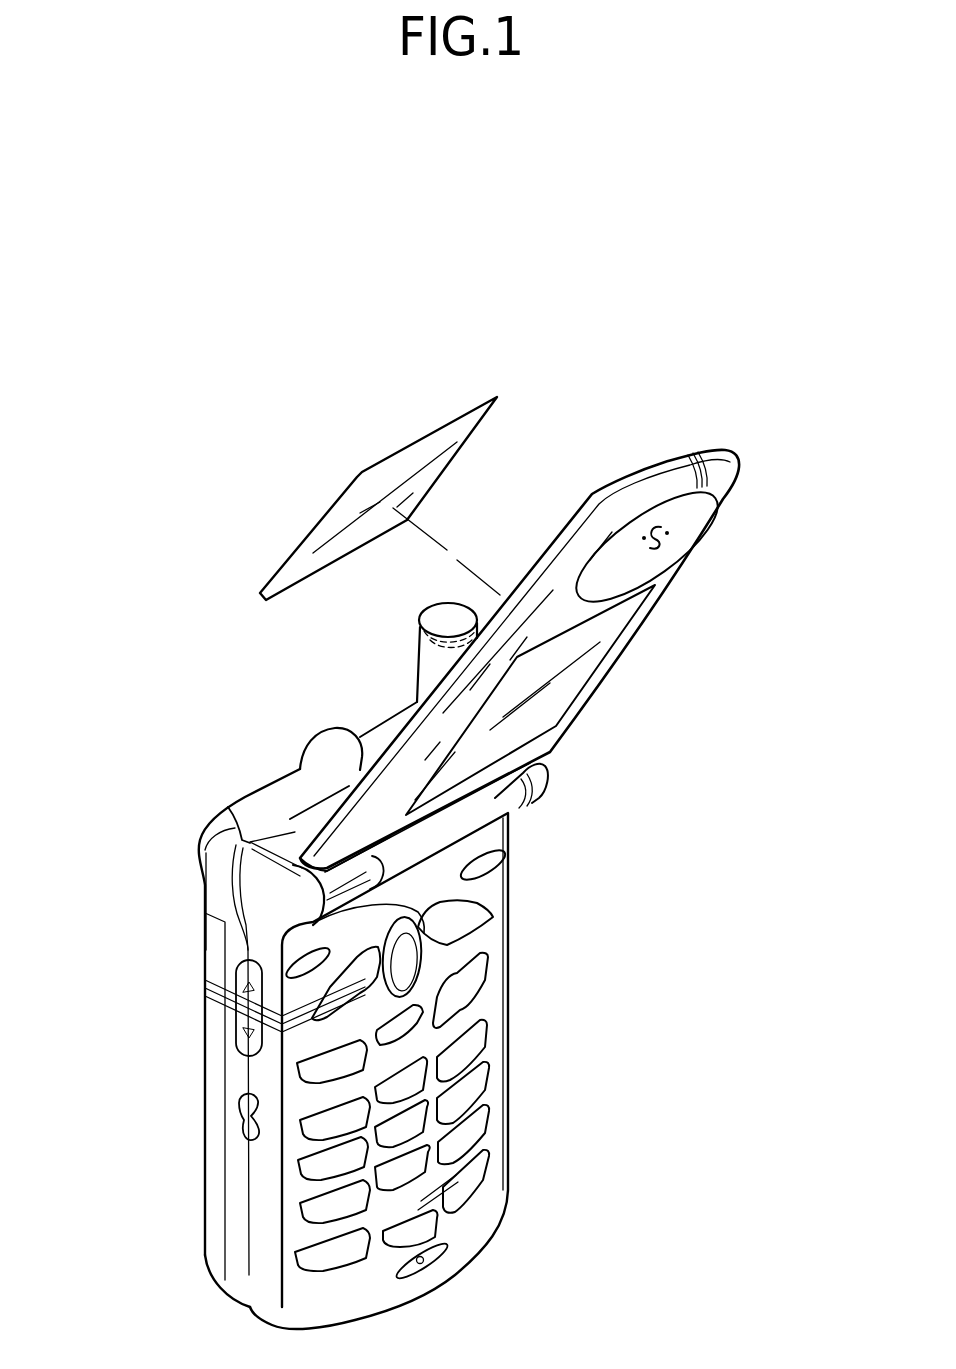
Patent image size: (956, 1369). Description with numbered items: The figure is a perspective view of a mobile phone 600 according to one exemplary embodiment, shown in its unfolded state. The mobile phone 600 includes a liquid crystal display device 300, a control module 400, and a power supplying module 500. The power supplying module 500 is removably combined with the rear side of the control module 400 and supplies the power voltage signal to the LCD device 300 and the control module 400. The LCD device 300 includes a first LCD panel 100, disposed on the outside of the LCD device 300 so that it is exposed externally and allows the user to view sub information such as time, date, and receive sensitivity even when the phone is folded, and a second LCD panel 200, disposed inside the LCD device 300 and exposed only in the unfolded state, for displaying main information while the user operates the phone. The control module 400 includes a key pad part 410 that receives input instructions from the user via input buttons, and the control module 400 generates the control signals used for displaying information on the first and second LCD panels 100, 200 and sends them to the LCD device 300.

The mobile phone 600 is at (408, 212).
The first LCD panel 100 is at (313, 523).
The second LCD panel 200 is at (550, 711).
The liquid crystal display device 300 is at (669, 452).
The control module 400 is at (200, 818).
The key pad part 410 is at (470, 1087).
The power supplying module 500 is at (213, 1155).